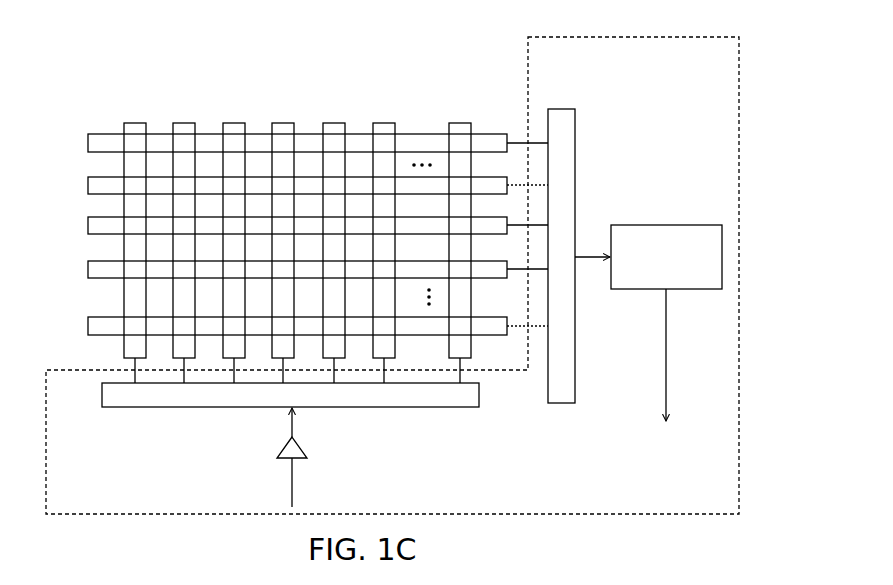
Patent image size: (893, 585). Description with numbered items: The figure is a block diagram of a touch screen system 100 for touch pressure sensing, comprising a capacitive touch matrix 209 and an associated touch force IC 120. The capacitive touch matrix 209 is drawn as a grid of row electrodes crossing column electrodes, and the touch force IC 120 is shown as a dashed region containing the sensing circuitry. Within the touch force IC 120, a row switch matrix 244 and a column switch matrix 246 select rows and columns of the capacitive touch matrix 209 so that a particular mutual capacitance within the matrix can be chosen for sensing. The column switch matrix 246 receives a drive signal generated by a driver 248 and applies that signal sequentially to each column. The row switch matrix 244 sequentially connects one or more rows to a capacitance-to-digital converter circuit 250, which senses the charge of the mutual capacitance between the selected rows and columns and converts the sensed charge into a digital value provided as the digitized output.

The touch screen system 100 is at (164, 76).
The capacitive touch matrix 209 is at (121, 131).
The touch force IC 120 is at (742, 37).
The row switch matrix 244 is at (576, 109).
The capacitance-to-digital converter circuit 250 is at (652, 224).
The column switch matrix 246 is at (177, 409).
The driver 248 is at (298, 441).